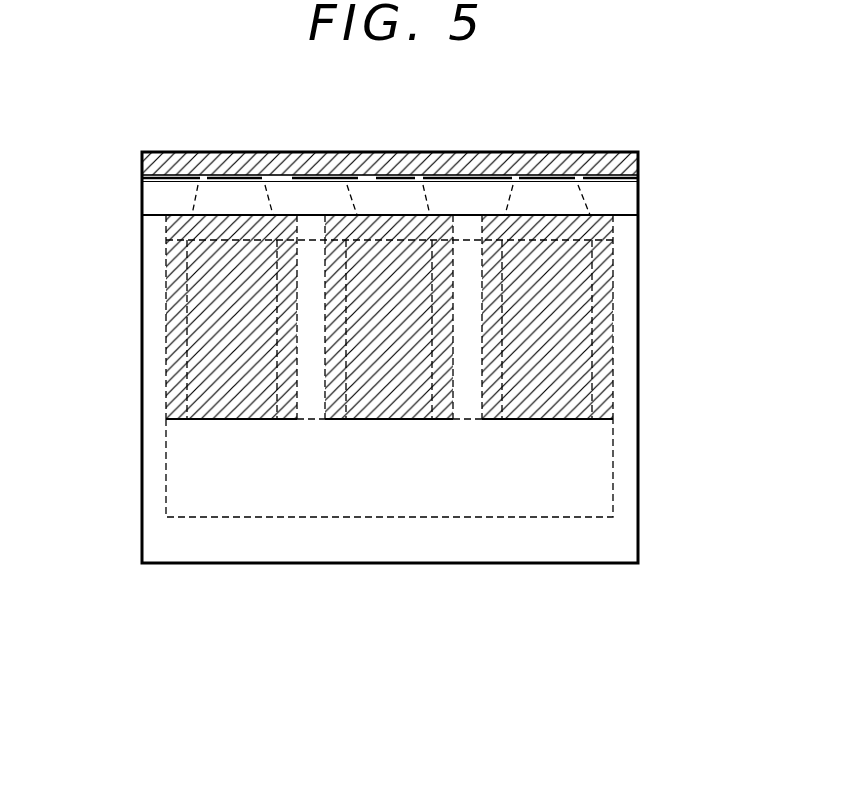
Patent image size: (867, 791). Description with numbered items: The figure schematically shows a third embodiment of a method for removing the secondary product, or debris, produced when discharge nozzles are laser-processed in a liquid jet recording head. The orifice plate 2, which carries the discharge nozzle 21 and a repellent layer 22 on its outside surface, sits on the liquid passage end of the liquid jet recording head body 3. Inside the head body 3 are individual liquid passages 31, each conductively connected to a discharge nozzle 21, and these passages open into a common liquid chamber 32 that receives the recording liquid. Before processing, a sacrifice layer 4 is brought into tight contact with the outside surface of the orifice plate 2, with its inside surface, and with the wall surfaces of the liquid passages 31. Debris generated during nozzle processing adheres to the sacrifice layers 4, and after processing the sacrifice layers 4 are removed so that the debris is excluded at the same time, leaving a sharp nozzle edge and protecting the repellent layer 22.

The orifice plate 2 is at (628, 200).
The discharge nozzle 21 is at (262, 201).
The repellent layer 22 is at (637, 176).
The liquid jet recording head body 3 is at (630, 391).
The liquid passage 31 is at (577, 346).
The common liquid chamber 32 is at (606, 500).
The sacrifice layer 4 is at (462, 157).